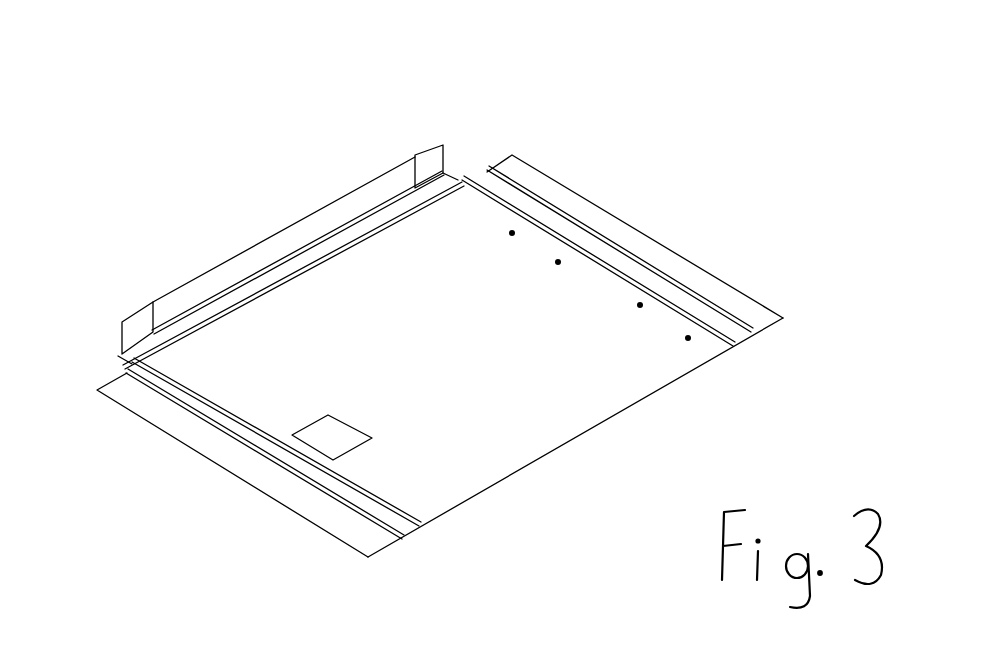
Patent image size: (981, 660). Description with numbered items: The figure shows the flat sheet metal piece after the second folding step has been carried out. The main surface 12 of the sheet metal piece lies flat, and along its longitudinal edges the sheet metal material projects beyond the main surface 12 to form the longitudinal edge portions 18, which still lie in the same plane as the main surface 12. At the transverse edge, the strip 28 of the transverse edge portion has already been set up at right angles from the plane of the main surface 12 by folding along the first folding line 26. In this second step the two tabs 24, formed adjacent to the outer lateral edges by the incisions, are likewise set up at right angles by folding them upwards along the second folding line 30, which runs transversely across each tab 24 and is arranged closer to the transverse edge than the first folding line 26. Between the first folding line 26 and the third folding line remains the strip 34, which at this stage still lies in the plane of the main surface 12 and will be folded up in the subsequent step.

The main surface 12 is at (572, 410).
The longitudinal edge portion 18 is at (637, 222).
The tab 24 is at (428, 165).
The first folding line 26 is at (328, 242).
The strip 28 is at (283, 236).
The second folding line 30 is at (455, 177).
The strip 34 is at (243, 294).